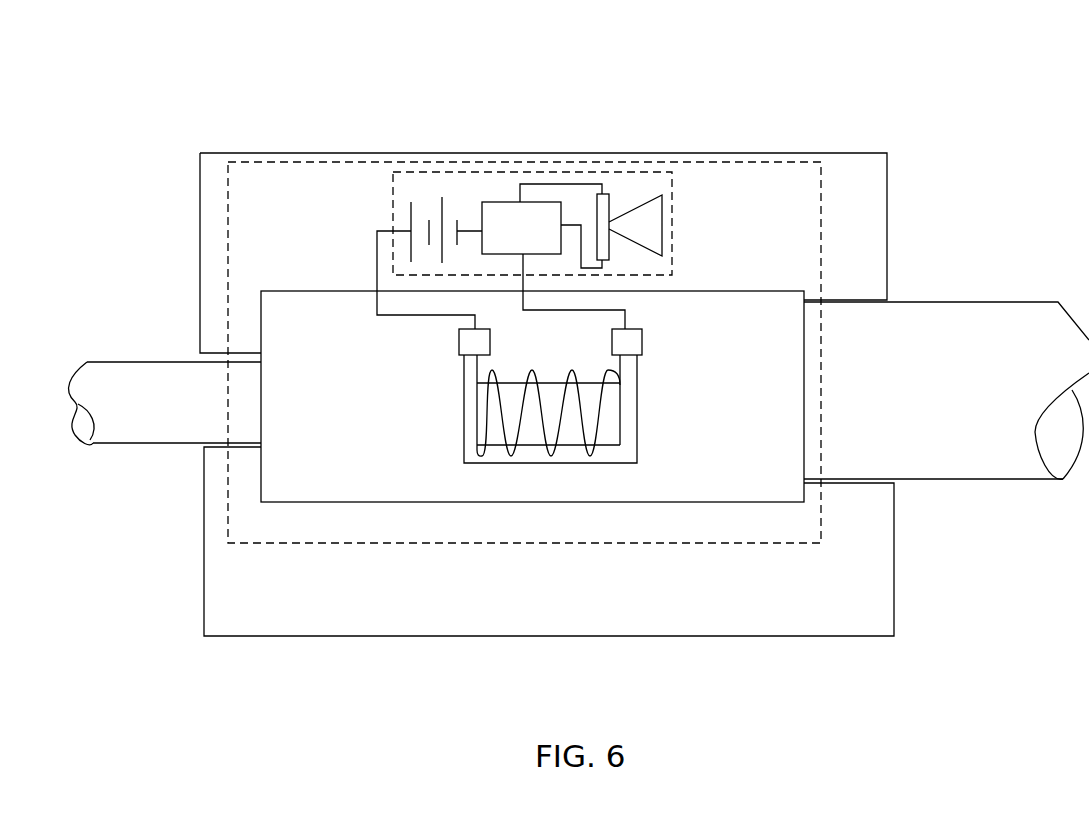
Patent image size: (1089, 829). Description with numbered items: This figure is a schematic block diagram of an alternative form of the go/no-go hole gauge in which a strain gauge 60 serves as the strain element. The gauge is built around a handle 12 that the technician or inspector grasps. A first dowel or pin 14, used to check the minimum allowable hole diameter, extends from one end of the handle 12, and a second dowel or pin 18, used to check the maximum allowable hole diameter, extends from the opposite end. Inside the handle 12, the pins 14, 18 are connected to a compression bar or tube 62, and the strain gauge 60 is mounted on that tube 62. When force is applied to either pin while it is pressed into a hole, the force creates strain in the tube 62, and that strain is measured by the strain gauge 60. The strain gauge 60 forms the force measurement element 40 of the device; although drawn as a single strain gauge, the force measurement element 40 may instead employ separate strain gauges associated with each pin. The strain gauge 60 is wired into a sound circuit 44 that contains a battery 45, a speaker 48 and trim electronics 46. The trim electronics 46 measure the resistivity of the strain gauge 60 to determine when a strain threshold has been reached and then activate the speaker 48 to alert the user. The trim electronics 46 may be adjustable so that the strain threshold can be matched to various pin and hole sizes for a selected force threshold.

The handle 12 is at (223, 636).
The first dowel or pin 14 is at (112, 445).
The second dowel or pin 18 is at (927, 302).
The force measurement element 40 is at (532, 543).
The sound circuit 44 is at (668, 214).
The battery 45 is at (410, 212).
The trim electronics 46 is at (503, 222).
The speaker 48 is at (632, 212).
The strain gauge 60 is at (637, 435).
The compression bar or tube 62 is at (622, 502).